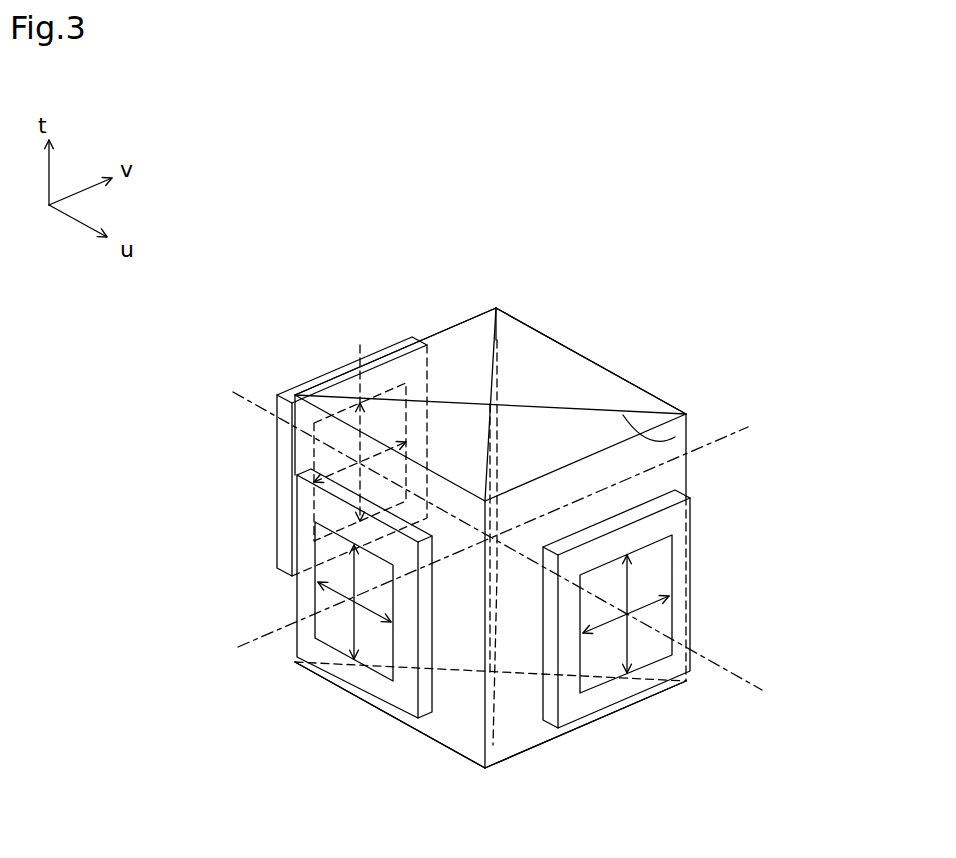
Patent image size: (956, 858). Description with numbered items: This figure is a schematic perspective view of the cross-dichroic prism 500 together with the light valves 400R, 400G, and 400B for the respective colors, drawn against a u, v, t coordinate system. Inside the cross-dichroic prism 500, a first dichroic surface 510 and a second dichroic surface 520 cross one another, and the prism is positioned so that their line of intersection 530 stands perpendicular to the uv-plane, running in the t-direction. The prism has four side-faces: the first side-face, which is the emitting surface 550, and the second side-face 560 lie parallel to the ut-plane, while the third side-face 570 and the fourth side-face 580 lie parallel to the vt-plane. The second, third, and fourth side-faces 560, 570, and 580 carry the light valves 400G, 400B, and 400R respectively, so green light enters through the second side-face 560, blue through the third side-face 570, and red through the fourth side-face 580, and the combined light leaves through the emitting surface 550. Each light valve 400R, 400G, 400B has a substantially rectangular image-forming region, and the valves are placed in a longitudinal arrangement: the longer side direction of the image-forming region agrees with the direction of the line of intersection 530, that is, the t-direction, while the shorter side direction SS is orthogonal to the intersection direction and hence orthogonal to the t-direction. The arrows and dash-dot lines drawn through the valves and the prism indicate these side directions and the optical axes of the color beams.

The cross-dichroic prism 500 is at (501, 491).
The first dichroic surface 510 is at (492, 350).
The second dichroic surface 520 is at (696, 420).
The line of intersection 530 is at (498, 470).
The emitting surface 550 is at (567, 342).
The second side-face 560 is at (458, 727).
The third side-face 570 is at (437, 332).
The fourth side-face 580 is at (518, 743).
The light valve for red 400R is at (583, 710).
The light valve for green 400G is at (403, 695).
The light valve for blue 400B is at (288, 393).
The shorter side direction SS is at (345, 462).